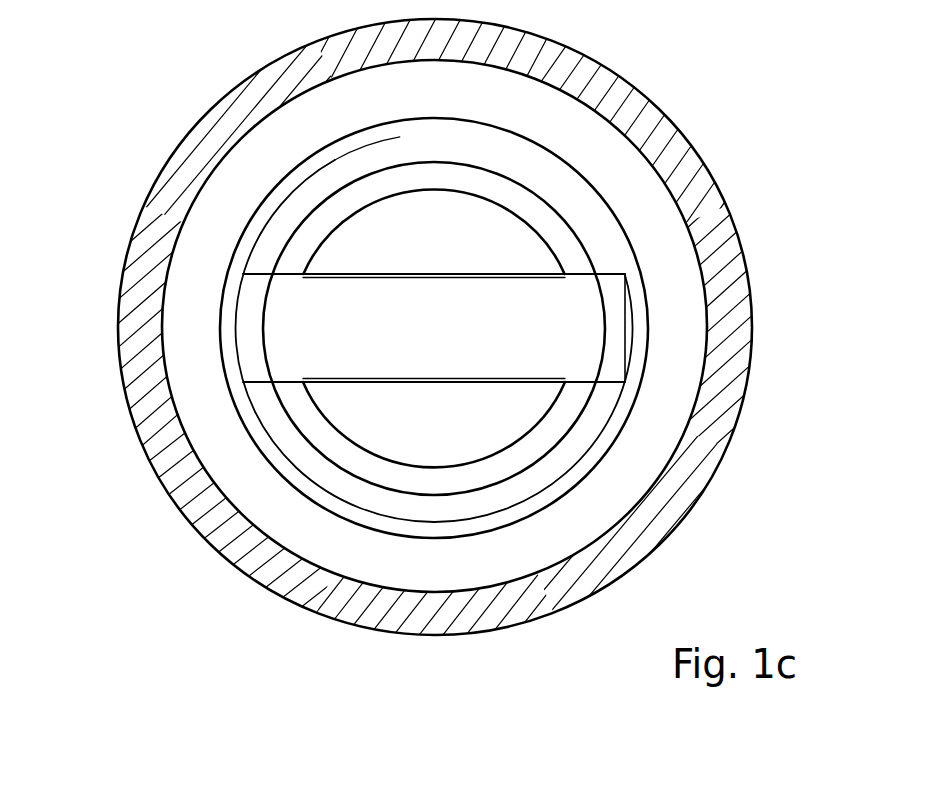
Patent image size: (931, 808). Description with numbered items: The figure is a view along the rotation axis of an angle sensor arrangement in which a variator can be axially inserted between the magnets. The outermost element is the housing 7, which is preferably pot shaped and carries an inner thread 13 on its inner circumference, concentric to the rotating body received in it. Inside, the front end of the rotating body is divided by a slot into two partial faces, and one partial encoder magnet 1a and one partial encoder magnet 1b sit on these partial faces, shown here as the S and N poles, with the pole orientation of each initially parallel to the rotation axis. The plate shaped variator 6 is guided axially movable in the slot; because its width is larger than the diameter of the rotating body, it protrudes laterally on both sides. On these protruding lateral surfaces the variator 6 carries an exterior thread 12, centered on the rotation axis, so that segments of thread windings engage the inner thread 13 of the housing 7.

The partial encoder magnet 1a is at (368, 203).
The partial encoder magnet 1b is at (410, 467).
The variator 6 is at (577, 382).
The housing 7 is at (160, 487).
The exterior thread 12 is at (248, 320).
The inner thread 13 is at (273, 233).